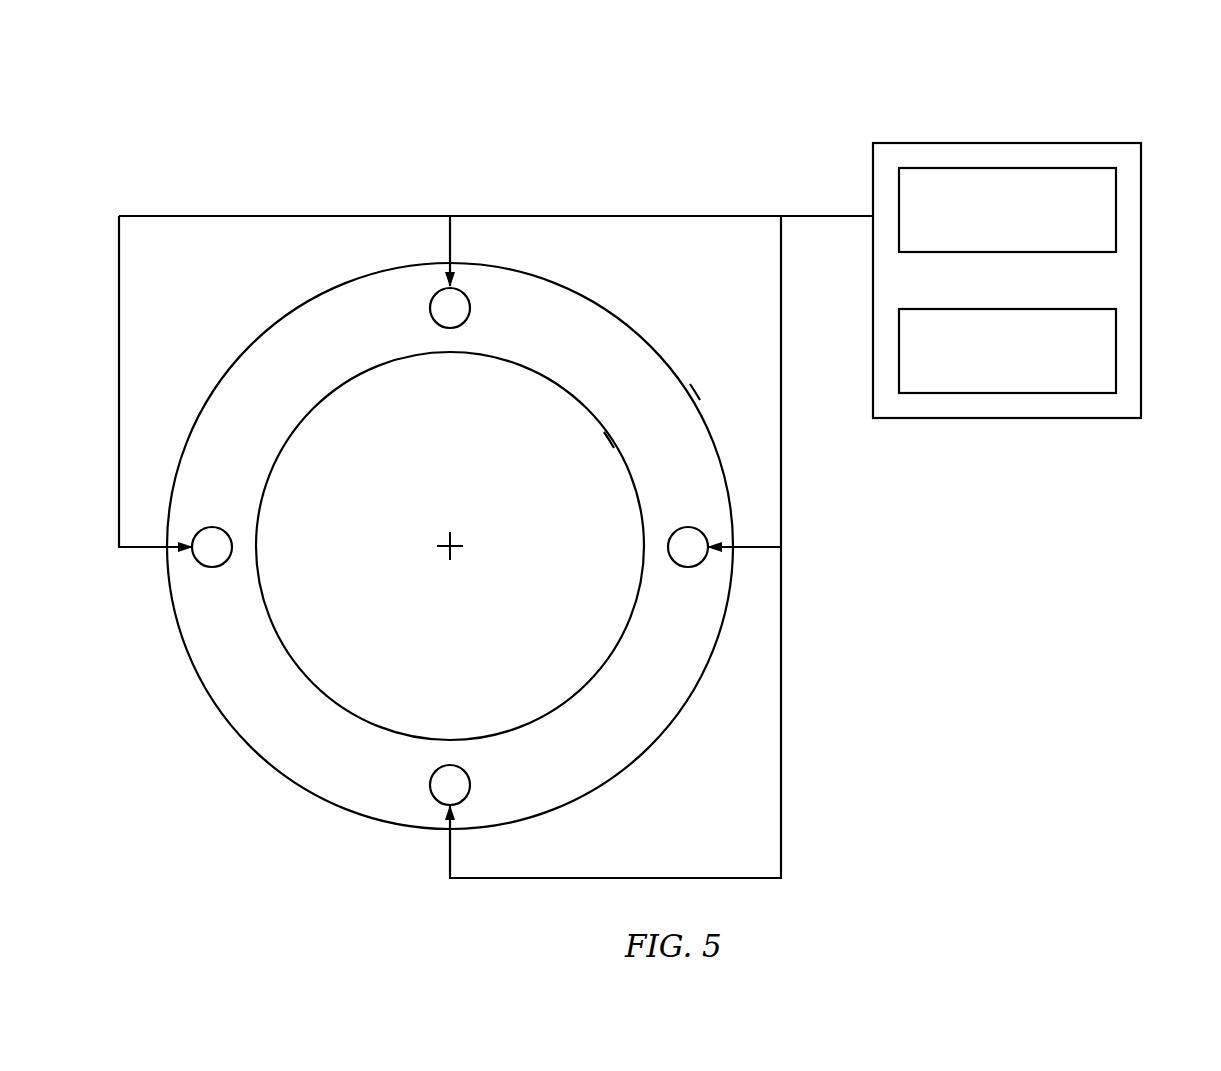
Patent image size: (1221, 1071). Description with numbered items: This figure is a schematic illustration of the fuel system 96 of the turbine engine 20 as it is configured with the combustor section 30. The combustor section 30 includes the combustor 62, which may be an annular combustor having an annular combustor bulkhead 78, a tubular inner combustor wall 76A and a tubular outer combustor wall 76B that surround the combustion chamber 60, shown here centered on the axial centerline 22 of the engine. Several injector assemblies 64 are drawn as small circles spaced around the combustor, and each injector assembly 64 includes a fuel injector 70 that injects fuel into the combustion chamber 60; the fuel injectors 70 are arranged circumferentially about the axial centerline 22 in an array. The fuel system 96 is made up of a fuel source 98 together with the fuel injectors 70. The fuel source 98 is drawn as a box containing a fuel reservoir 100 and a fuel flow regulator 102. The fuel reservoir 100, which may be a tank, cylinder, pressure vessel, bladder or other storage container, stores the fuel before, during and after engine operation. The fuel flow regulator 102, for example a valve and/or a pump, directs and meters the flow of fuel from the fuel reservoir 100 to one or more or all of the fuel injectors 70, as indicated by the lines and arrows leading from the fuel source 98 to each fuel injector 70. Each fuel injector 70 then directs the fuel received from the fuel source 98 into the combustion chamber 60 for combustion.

The turbine engine 20 is at (200, 124).
The axial centerline 22 is at (455, 552).
The combustor section 30 is at (466, 498).
The combustion chamber 60 is at (621, 380).
The combustor 62 is at (640, 322).
The injector assembly 64 is at (450, 546).
The fuel injector 70 is at (452, 329).
The inner combustor wall 76A is at (609, 440).
The outer combustor wall 76B is at (686, 381).
The combustor bulkhead 78 is at (355, 358).
The fuel system 96 is at (1007, 229).
The fuel source 98 is at (1141, 280).
The fuel reservoir 100 is at (987, 381).
The fuel flow regulator 102 is at (987, 241).